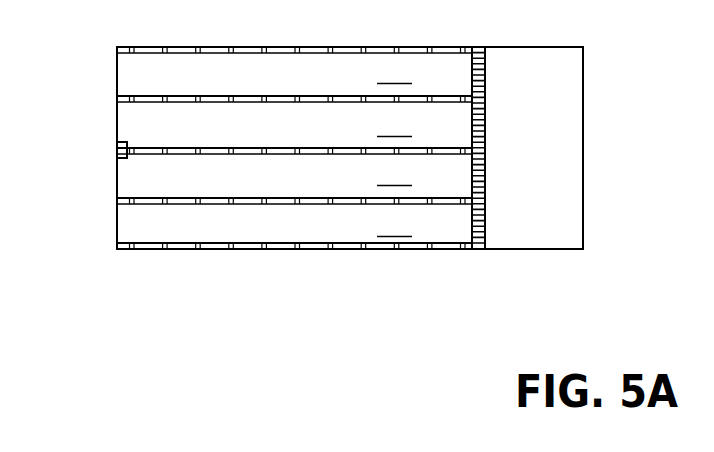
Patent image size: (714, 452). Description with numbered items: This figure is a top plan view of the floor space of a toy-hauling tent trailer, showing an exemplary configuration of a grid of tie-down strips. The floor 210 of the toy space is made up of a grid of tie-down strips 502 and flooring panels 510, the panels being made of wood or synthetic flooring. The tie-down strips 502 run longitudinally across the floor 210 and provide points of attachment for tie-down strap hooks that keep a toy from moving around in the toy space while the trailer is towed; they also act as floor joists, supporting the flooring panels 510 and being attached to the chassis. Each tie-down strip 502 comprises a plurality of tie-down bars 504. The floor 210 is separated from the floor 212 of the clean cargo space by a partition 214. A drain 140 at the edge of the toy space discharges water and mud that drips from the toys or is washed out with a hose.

The drain 140 is at (115, 150).
The floor 210 is at (252, 148).
The floor of the clean cargo space 212 is at (555, 162).
The partition 214 is at (481, 46).
The tie-down strips 502 is at (145, 155).
The tie-down bars 504 is at (163, 52).
The flooring panels 510 is at (394, 148).